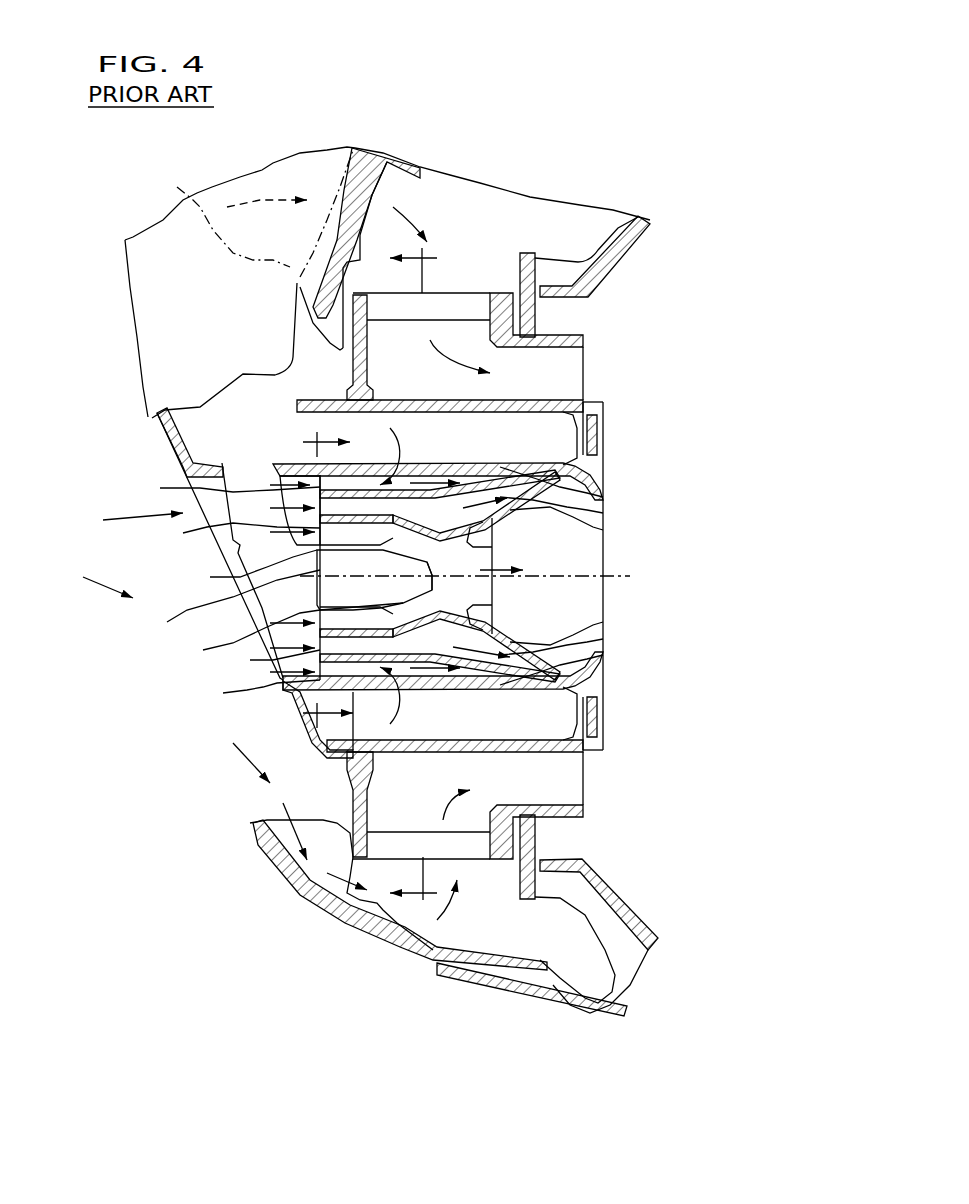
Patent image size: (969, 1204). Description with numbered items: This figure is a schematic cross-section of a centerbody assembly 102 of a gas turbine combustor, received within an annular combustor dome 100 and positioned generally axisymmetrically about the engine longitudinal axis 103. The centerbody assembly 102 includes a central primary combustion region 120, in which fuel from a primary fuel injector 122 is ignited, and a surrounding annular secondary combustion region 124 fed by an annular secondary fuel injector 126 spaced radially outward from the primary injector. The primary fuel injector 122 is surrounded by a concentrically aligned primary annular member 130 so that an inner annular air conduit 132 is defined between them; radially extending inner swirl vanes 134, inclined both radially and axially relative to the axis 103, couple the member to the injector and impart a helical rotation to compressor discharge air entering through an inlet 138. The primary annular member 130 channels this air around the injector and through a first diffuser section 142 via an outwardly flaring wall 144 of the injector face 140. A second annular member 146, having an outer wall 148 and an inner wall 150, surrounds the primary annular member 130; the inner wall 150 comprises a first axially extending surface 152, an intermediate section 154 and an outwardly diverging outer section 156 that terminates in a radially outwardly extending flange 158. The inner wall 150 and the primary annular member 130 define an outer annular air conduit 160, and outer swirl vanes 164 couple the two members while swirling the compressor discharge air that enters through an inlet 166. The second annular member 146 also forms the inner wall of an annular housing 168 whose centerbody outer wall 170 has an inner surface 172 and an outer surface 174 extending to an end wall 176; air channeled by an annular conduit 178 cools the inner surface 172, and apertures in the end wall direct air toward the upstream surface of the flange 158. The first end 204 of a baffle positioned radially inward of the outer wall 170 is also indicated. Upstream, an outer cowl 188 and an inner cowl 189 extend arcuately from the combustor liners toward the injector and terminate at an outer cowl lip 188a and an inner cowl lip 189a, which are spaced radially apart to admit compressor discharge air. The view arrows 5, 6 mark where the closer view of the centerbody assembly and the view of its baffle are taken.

The section line 5- 5 is at (318, 579).
The section line 6- 6 is at (423, 563).
The combustor dome 100 is at (627, 257).
The centerbody assembly 102 is at (100, 553).
The engine longitudinal axis 103 is at (635, 570).
The primary combustion region 120 is at (713, 513).
The primary fuel injector 122 is at (339, 577).
The secondary combustion region 124 is at (633, 370).
The secondary fuel injector 126 is at (502, 453).
The primary annular member 130 is at (483, 522).
The inner annular air conduit 132 is at (440, 575).
The inner swirl vanes 134 is at (222, 715).
The inlet 138 is at (243, 606).
The injector face 140 is at (430, 585).
The first diffuser section 142 is at (497, 590).
The outwardly-flaring wall 144 is at (492, 547).
The second annular member 146 is at (350, 488).
The outer wall 148 is at (417, 477).
The inner wall 150 is at (603, 513).
The first axially extending surface 152 is at (287, 740).
The intermediate section 154 is at (480, 521).
The outwardly-diverging outer section 156 is at (603, 497).
The flange 158 is at (603, 437).
The outer annular air conduit 160 is at (603, 530).
The outer swirl vanes 164 is at (340, 515).
The inlet 166 is at (235, 597).
The annular housing 168 is at (163, 437).
The centerbody outer wall 170 is at (430, 400).
The inner surface 172 is at (600, 477).
The outer surface 174 is at (580, 393).
The end wall 176 is at (406, 569).
The annular conduit 178 is at (222, 591).
The outer cowl 188 is at (357, 150).
The outer cowl lip 188a is at (177, 187).
The inner cowl 189 is at (293, 897).
The inner cowl lip 189a is at (250, 823).
The baffle first end 204 is at (593, 403).